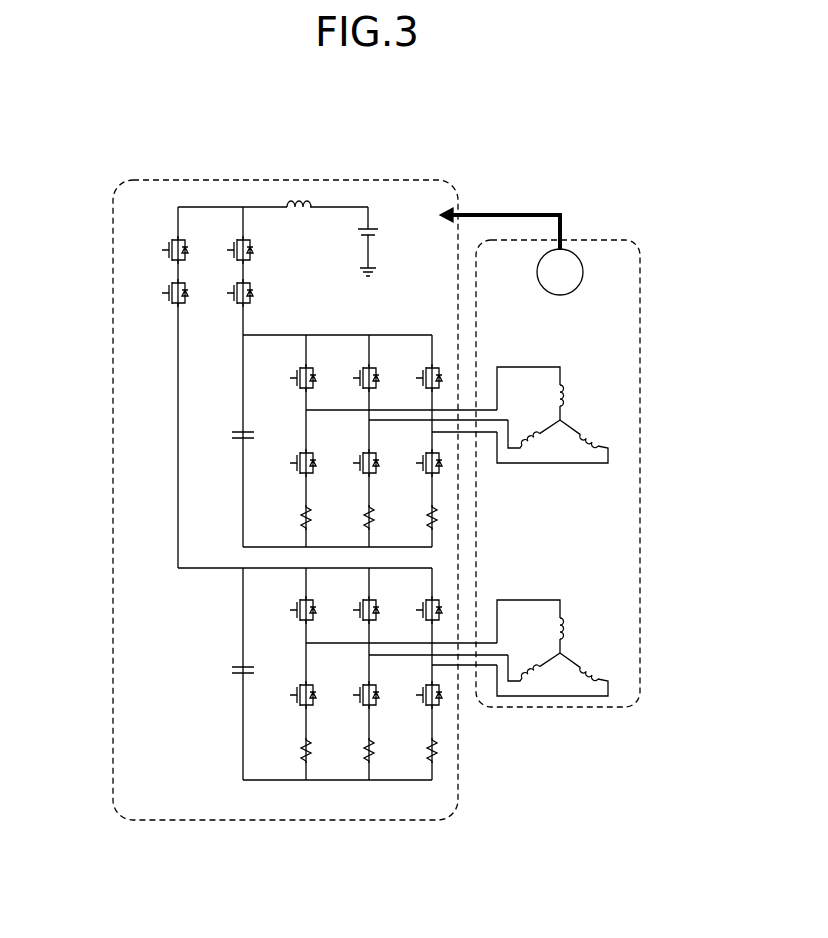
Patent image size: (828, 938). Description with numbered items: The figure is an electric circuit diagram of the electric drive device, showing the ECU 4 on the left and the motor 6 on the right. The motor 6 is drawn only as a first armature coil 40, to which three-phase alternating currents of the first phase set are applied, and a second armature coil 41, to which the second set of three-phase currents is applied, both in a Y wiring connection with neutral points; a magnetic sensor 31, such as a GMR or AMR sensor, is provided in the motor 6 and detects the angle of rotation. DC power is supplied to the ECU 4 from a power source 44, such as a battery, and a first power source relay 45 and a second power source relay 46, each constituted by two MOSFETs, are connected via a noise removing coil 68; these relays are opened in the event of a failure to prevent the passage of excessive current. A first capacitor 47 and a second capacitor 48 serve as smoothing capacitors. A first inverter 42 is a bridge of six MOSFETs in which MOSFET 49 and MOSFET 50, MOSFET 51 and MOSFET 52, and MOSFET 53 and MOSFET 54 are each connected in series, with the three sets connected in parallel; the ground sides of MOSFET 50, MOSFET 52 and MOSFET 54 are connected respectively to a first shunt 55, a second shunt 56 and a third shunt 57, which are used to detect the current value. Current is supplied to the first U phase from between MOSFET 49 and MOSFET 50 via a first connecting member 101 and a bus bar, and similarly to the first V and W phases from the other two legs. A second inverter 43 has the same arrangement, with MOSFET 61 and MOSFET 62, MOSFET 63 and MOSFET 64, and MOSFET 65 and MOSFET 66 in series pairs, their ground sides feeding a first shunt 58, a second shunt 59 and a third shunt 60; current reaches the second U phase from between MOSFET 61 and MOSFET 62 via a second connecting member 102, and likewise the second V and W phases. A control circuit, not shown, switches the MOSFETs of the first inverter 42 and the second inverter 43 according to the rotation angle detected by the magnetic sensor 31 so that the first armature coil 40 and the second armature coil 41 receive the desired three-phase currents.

The ECU 4 is at (263, 822).
The motor 6 is at (640, 523).
The magnetic sensor 31 is at (577, 262).
The first armature coil 40 is at (582, 412).
The second armature coil 41 is at (582, 645).
The first inverter 42 is at (106, 344).
The second inverter 43 is at (108, 733).
The power source 44 is at (375, 232).
The first power source relay 45 is at (220, 268).
The second power source relay 46 is at (155, 272).
The first capacitor 47 is at (222, 436).
The second capacitor 48 is at (228, 668).
The MOSFET 49 is at (300, 347).
The MOSFET 50 is at (284, 465).
The MOSFET 51 is at (408, 345).
The MOSFET 52 is at (348, 468).
The MOSFET 53 is at (443, 377).
The MOSFET 54 is at (448, 465).
The first shunt 55 is at (292, 513).
The second shunt 56 is at (355, 518).
The third shunt 57 is at (448, 527).
The first shunt 58 is at (292, 750).
The second shunt 59 is at (357, 748).
The third shunt 60 is at (440, 752).
The MOSFET 61 is at (284, 610).
The MOSFET 62 is at (284, 695).
The MOSFET 63 is at (380, 603).
The MOSFET 64 is at (380, 705).
The MOSFET 65 is at (447, 608).
The MOSFET 66 is at (447, 700).
The noise removing coil 68 is at (305, 195).
The first connecting member 101 is at (458, 410).
The second connecting member 102 is at (463, 665).